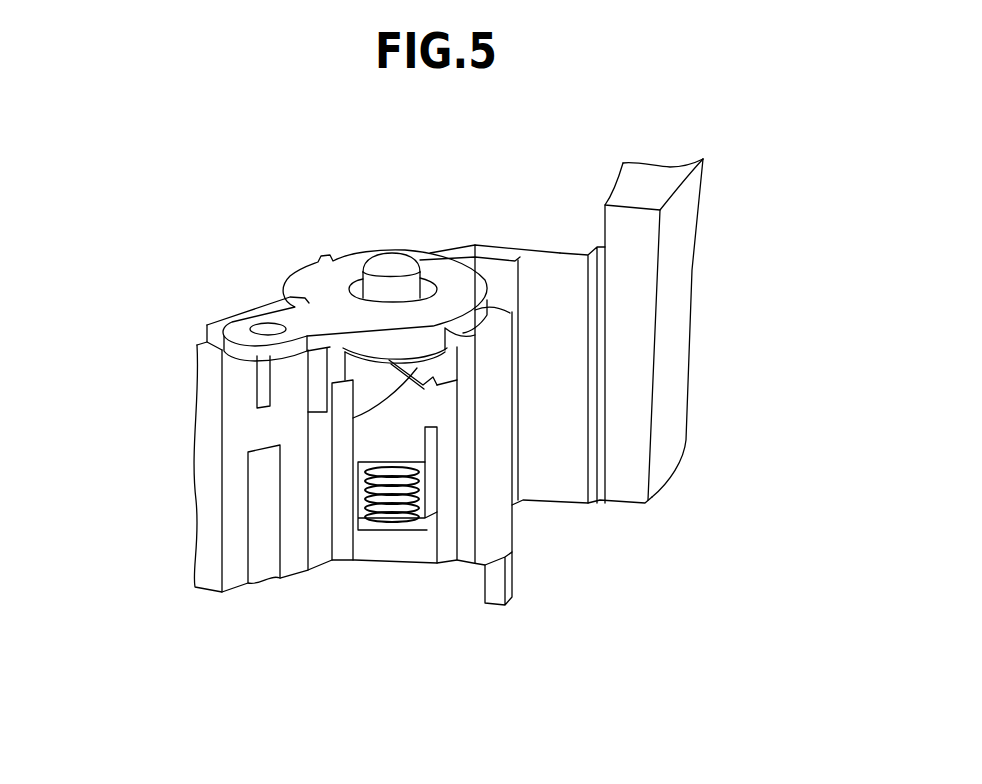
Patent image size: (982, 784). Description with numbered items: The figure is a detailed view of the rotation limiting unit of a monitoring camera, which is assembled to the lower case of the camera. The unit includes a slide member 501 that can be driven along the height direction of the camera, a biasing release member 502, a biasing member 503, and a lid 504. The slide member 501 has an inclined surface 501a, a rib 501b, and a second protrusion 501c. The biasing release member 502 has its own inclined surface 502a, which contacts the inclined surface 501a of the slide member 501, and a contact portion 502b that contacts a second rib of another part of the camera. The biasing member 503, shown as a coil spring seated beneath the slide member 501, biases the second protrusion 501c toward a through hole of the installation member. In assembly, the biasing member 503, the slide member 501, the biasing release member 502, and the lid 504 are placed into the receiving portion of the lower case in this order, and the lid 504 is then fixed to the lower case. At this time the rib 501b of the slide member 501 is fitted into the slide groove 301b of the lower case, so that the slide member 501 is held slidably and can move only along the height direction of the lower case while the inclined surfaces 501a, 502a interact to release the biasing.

The slide member 501 is at (367, 447).
The inclined surface 501a is at (345, 428).
The rib 501b is at (433, 457).
The second protrusion 501c is at (392, 263).
The biasing release member 502 is at (500, 453).
The inclined surface 502a is at (430, 358).
The contact portion 502b is at (500, 570).
The biasing member 503 is at (383, 527).
The lid 504 is at (313, 285).
The slide groove 301b is at (333, 368).